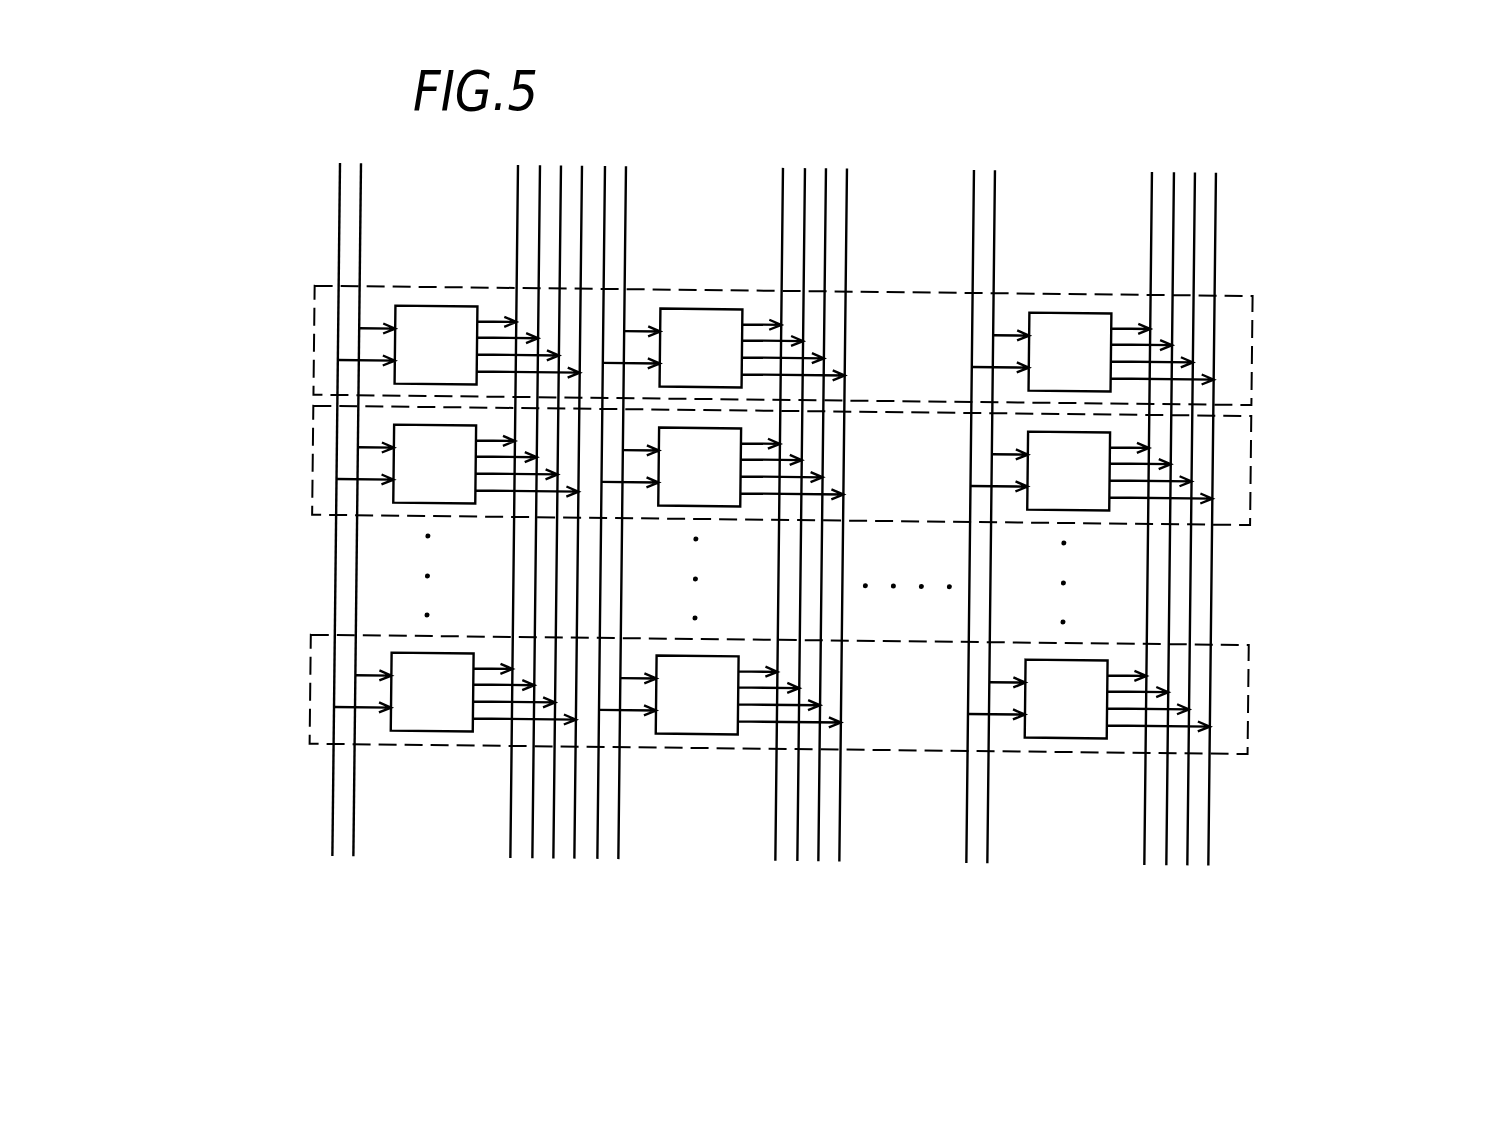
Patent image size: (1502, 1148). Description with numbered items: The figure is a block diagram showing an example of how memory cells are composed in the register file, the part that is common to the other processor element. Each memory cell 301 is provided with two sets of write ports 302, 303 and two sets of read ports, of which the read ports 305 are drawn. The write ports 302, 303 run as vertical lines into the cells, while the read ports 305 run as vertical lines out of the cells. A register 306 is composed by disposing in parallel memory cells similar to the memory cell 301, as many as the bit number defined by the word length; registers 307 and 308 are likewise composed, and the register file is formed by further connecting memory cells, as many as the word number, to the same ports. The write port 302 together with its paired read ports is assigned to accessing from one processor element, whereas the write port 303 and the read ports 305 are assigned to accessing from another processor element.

The memory cell 301 is at (397, 306).
The write port 302 is at (332, 781).
The write port 303 is at (353, 842).
The read ports 305 is at (500, 819).
The register 306 is at (826, 345).
The register 307 is at (1257, 466).
The register 308 is at (1257, 693).